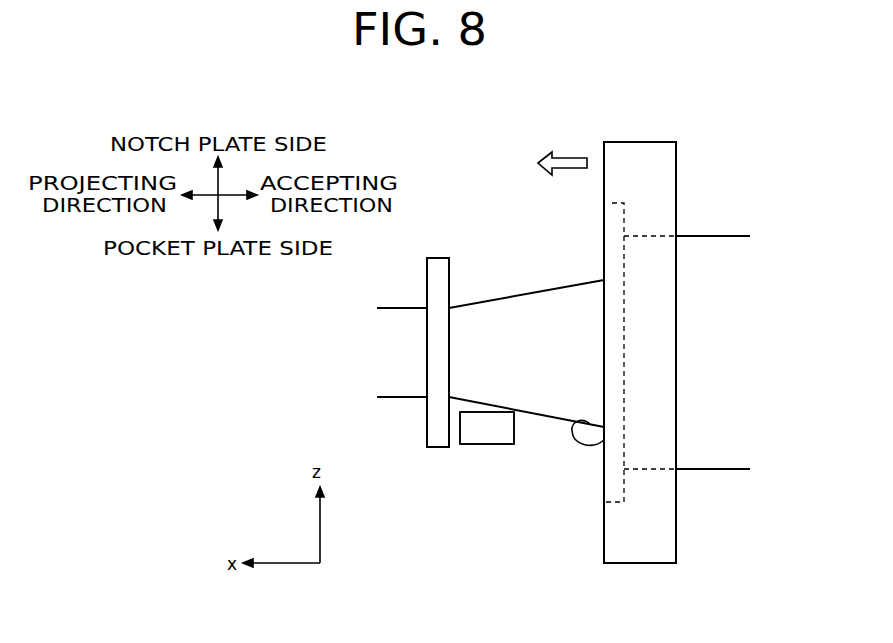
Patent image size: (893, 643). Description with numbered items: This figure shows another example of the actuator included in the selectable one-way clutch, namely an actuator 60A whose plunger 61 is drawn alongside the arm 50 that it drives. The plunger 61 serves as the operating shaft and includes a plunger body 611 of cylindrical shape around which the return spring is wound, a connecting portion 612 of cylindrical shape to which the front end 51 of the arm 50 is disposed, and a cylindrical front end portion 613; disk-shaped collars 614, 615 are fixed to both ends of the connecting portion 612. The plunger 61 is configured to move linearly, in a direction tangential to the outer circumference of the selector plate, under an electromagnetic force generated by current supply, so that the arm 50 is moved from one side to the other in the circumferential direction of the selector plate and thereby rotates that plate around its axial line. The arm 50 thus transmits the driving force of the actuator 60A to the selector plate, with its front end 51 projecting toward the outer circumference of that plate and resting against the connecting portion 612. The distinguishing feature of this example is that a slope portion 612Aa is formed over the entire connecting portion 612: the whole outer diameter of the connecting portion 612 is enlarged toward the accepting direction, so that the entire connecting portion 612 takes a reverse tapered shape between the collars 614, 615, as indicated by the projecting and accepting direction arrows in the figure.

The actuator 60A is at (714, 142).
The plunger body 611 is at (714, 236).
The connecting portion 612 is at (553, 270).
The slope portion 612Aa is at (604, 440).
The front end portion 613 is at (403, 308).
The collar 614 is at (437, 258).
The collar 615 is at (624, 483).
The plunger 61 is at (388, 407).
The arm 50 is at (487, 463).
The front end 51 is at (514, 428).